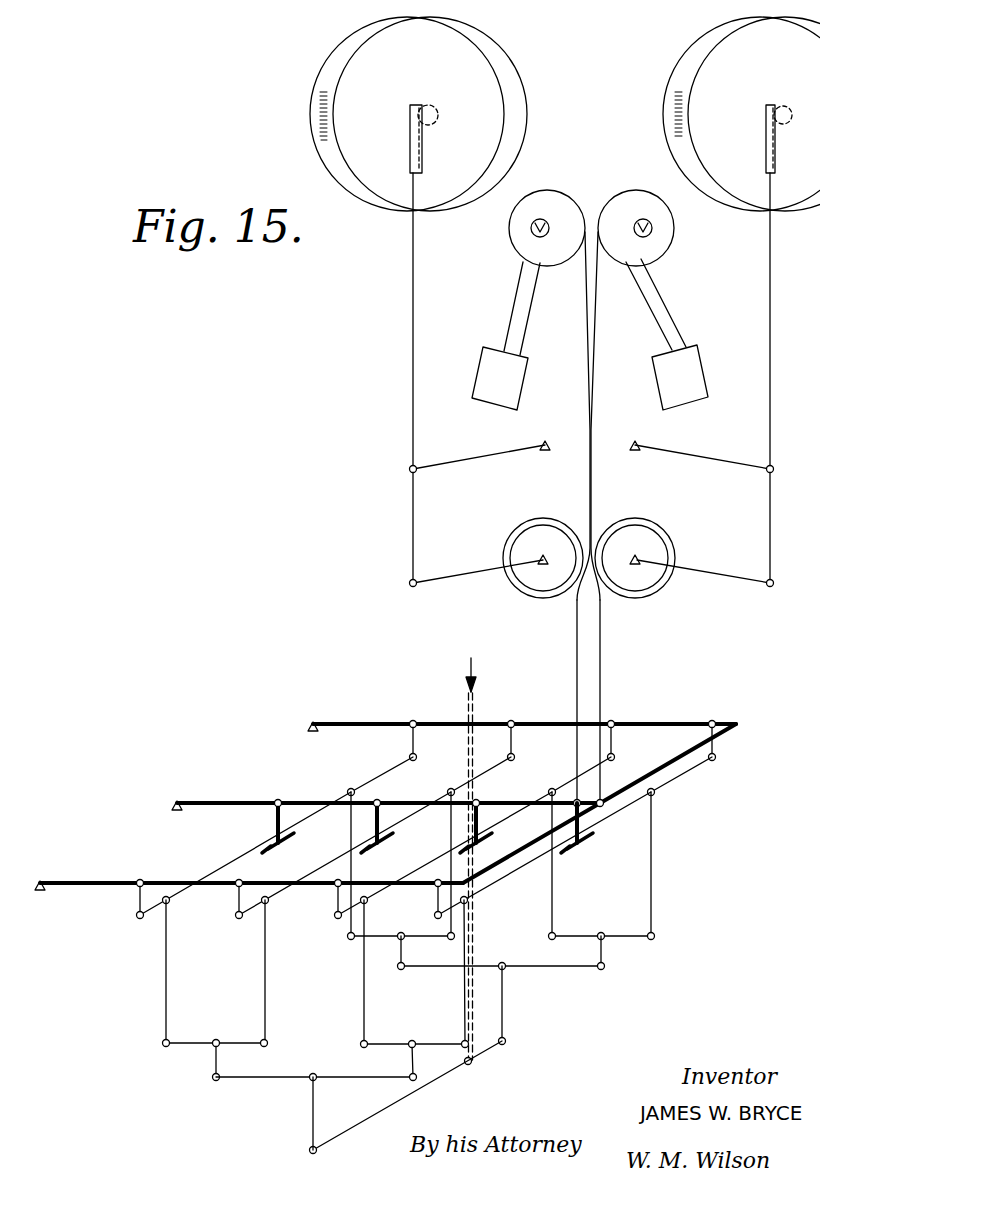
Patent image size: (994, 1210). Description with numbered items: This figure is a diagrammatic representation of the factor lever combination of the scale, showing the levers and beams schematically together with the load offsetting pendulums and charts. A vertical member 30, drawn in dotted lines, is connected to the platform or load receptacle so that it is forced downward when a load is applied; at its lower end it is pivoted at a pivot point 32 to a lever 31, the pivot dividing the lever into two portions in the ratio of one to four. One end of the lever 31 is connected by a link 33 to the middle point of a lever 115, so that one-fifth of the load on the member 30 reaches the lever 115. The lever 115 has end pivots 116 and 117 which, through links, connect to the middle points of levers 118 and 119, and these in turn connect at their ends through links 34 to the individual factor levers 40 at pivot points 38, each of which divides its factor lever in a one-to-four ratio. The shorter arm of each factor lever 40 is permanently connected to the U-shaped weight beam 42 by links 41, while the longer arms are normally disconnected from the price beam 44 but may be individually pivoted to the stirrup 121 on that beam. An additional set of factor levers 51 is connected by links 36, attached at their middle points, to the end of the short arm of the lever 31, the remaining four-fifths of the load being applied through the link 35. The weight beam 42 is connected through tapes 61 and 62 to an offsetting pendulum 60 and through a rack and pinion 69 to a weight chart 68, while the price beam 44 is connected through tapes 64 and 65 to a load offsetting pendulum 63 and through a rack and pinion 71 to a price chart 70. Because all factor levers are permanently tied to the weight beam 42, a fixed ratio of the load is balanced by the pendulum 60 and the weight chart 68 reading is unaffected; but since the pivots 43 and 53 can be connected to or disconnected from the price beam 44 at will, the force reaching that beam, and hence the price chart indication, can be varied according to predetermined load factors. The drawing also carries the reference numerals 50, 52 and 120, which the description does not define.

The vertical member 30 is at (474, 698).
The lever 31 is at (424, 1087).
The pivot point 32 is at (473, 1062).
The link 33 is at (315, 1099).
The links 34 is at (169, 975).
The link 35 is at (505, 1006).
The links 36 is at (447, 843).
The pivot points 38 is at (170, 901).
The factor levers 40 is at (236, 861).
The links 41 is at (137, 911).
The weight beam 42 is at (354, 722).
The pivots 43 is at (264, 845).
The price beam 44 is at (228, 801).
The contact points 50 is at (448, 791).
The factor levers 51 is at (388, 770).
The contact points 52 is at (742, 754).
The pivots 53 is at (296, 836).
The offsetting pendulum 60 is at (517, 378).
The tape 61 is at (603, 630).
The tape 62 is at (585, 300).
The load offsetting pendulum 63 is at (660, 388).
The tape 64 is at (576, 626).
The tape 65 is at (593, 310).
The weight chart 68 is at (667, 81).
The rack and pinion 69 is at (780, 104).
The price chart 70 is at (318, 96).
The rack and pinion 71 is at (436, 106).
The lever 115 is at (257, 1080).
The end pivot 116 is at (215, 1081).
The end pivot 117 is at (417, 1073).
The lever 118 is at (186, 1045).
The lever 119 is at (380, 1046).
The contact points 120 is at (162, 1044).
The stirrup 121 is at (345, 810).